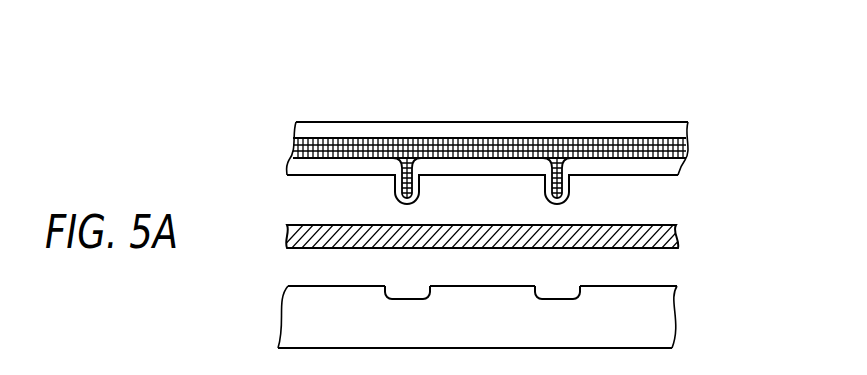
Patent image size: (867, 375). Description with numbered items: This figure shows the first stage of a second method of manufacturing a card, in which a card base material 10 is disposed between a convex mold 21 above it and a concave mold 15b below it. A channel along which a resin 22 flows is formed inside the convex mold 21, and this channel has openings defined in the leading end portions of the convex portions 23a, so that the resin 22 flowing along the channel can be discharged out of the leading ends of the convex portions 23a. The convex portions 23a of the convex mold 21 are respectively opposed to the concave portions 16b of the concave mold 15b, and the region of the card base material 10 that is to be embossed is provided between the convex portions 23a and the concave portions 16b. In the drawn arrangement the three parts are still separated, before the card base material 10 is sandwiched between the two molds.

The convex mold 21 is at (674, 84).
The resin 22 is at (689, 144).
The convex portions 23a is at (569, 185).
The card base material 10 is at (678, 230).
The concave mold 15b is at (648, 327).
The concave portions 16b is at (571, 288).